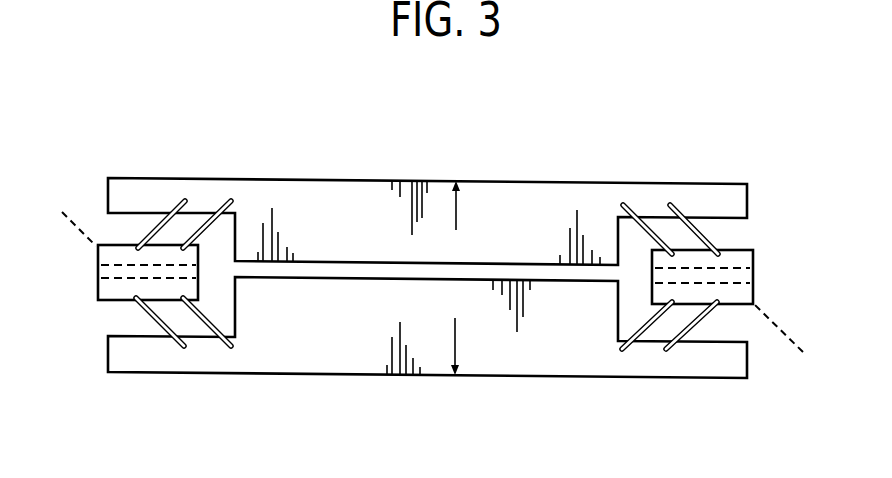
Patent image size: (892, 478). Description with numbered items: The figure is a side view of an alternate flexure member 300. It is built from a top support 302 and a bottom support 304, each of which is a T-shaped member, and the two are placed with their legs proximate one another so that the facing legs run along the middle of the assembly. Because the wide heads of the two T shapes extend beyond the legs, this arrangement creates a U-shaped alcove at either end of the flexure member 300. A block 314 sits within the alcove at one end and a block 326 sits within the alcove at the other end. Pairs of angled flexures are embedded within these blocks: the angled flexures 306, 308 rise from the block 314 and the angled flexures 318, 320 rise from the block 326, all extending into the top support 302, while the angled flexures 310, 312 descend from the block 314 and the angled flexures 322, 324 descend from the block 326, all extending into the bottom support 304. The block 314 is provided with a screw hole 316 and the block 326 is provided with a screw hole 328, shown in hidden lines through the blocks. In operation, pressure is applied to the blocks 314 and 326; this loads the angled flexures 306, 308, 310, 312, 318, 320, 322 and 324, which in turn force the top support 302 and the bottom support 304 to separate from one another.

The flexure member 300 is at (506, 166).
The top support 302 is at (353, 188).
The bottom support 304 is at (330, 342).
The angled flexure 306 is at (153, 227).
The angled flexure 308 is at (227, 205).
The angled flexure 310 is at (158, 322).
The angled flexure 312 is at (223, 345).
The block 314 is at (100, 300).
The screw hole 316 is at (69, 214).
The angled flexure 318 is at (703, 237).
The angled flexure 320 is at (633, 215).
The angled flexure 322 is at (705, 315).
The angled flexure 324 is at (635, 332).
The block 326 is at (755, 252).
The screw hole 328 is at (793, 344).